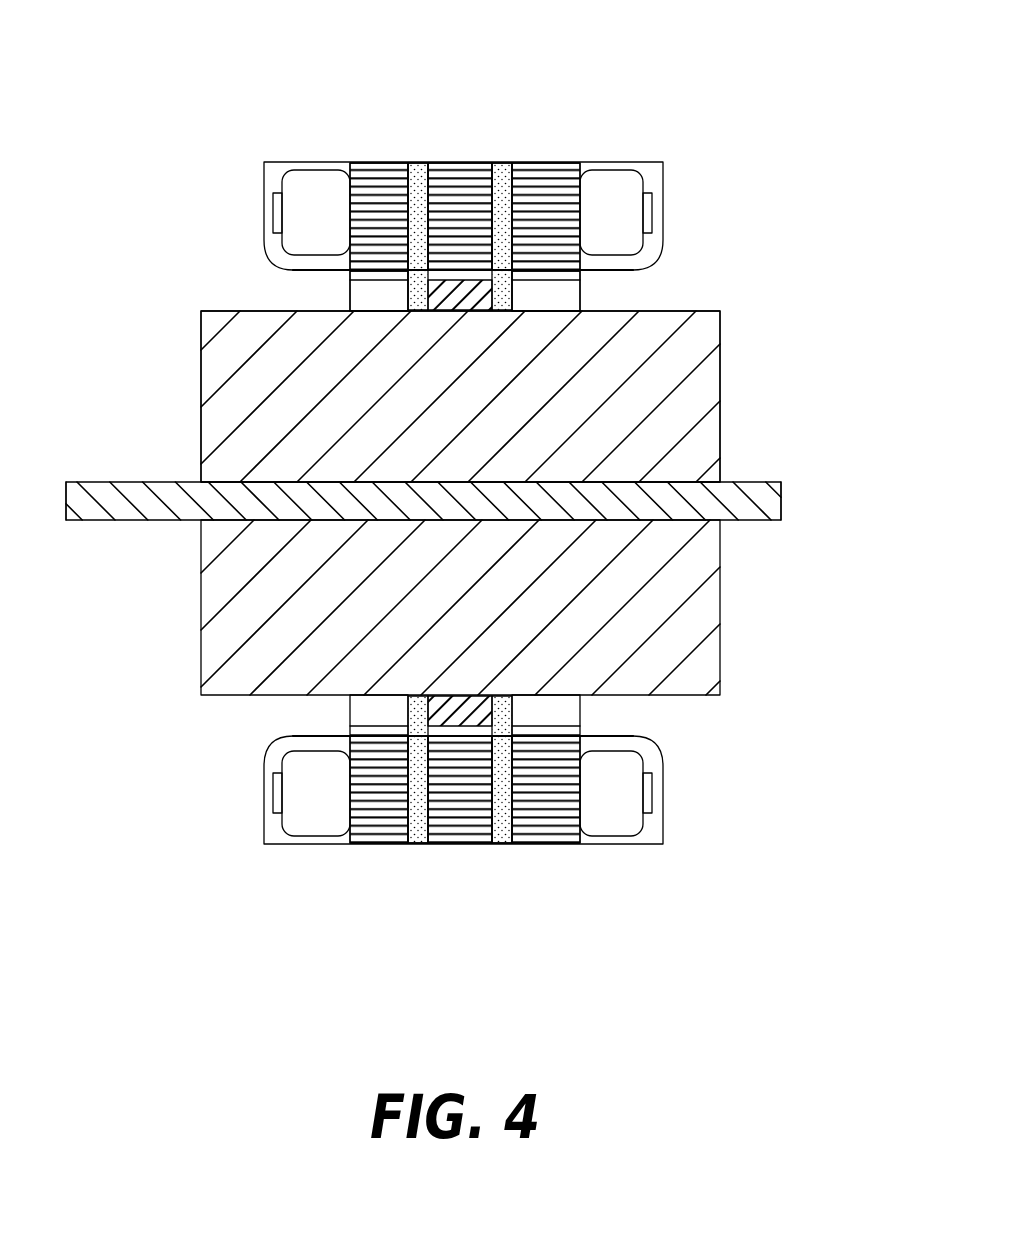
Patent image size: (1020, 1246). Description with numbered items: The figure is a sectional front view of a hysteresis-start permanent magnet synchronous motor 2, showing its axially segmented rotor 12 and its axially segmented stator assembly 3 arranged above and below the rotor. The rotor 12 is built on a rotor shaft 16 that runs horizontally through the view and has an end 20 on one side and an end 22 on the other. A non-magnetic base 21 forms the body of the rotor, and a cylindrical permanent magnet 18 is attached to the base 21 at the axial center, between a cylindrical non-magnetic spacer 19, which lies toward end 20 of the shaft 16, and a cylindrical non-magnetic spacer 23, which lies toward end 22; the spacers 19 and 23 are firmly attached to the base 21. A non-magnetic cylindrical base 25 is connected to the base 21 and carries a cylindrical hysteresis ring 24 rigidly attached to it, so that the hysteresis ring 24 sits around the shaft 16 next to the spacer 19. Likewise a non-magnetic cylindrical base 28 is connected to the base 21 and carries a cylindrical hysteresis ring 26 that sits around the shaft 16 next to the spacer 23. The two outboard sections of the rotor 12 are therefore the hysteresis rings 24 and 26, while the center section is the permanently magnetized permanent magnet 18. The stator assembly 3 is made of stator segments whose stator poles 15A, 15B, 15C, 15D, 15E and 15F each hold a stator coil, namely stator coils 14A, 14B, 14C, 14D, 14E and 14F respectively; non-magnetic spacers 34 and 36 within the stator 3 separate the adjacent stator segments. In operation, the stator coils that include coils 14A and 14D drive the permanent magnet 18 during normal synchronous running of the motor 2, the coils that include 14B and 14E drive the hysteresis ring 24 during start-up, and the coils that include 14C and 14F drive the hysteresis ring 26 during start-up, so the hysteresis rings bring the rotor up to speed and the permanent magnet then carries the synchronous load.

The hysteresis-start permanent magnet synchronous motor 2 is at (196, 950).
The segmented stator assembly 3 is at (697, 202).
The rotor 12 is at (762, 353).
The stator coil 14A is at (460, 190).
The stator coil 14B is at (375, 192).
The stator coil 14C is at (545, 190).
The stator coil 14D is at (457, 813).
The stator coil 14E is at (380, 783).
The stator coil 14F is at (543, 783).
The stator pole 15A is at (451, 158).
The stator pole 15B is at (389, 158).
The stator pole 15C is at (524, 158).
The stator pole 15D is at (443, 848).
The stator pole 15E is at (381, 848).
The stator pole 15F is at (551, 848).
The rotor shaft 16 is at (740, 482).
The permanent magnet 18 is at (462, 280).
The non-magnetic spacer 19 is at (415, 311).
The end of rotor shaft 20 is at (66, 482).
The non-magnetic base 21 is at (720, 324).
The end of rotor shaft 22 is at (781, 510).
The non-magnetic spacer 23 is at (505, 311).
The hysteresis ring 24 is at (372, 281).
The non-magnetic cylindrical base 25 is at (350, 297).
The hysteresis ring 26 is at (553, 281).
The non-magnetic cylindrical base 28 is at (580, 296).
The non-magnetic spacer 34 is at (407, 238).
The non-magnetic spacer 36 is at (503, 233).